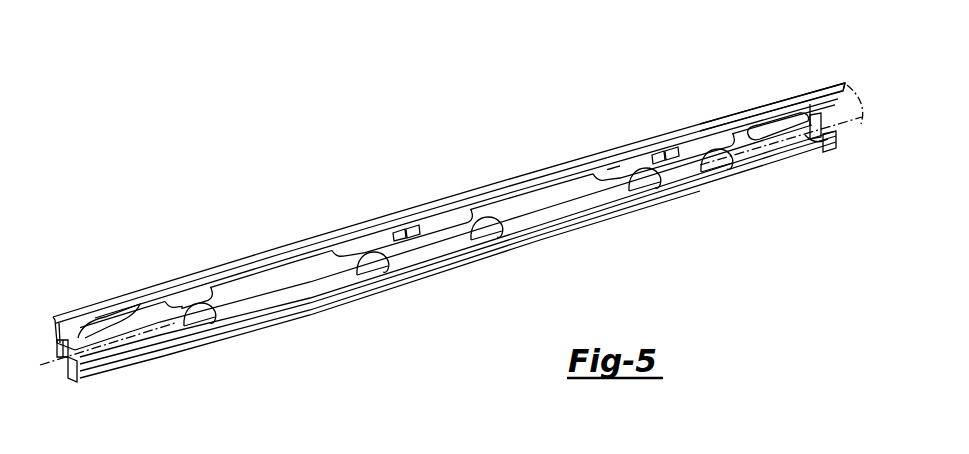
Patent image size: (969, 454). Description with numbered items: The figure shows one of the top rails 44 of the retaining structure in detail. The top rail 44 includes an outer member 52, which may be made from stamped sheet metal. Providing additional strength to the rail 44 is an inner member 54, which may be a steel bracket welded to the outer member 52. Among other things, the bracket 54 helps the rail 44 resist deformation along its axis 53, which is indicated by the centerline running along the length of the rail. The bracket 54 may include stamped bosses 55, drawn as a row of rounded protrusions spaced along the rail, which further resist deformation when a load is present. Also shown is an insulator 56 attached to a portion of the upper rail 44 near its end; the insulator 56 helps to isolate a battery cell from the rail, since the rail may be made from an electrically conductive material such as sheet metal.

The top rail 44 is at (384, 214).
The outer member 52 is at (787, 168).
The axis 53 is at (846, 85).
The inner member 54 is at (824, 141).
The stamped bosses 55 is at (201, 316).
The insulator 56 is at (60, 358).